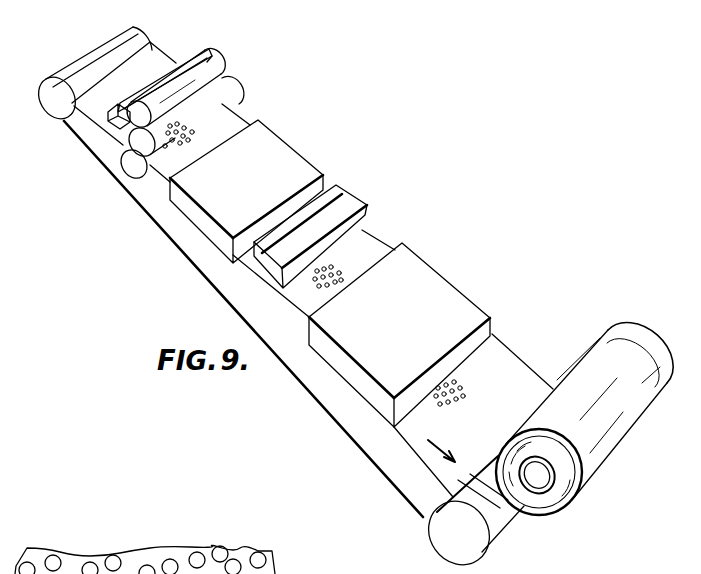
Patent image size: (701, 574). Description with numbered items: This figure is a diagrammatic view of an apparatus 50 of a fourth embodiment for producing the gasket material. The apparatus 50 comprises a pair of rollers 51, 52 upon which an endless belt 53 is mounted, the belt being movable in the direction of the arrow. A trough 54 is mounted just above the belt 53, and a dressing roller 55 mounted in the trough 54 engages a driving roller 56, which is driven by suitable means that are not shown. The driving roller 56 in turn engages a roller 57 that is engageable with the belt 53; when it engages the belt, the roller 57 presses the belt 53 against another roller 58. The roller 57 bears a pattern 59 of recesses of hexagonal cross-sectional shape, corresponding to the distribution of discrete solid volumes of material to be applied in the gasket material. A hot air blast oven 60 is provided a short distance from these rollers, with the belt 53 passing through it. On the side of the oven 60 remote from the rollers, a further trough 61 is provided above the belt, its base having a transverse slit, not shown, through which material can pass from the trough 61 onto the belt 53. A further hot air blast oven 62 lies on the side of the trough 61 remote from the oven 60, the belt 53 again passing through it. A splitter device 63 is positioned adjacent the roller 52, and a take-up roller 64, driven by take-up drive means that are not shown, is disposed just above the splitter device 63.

The apparatus 50 is at (300, 146).
The roller 51 is at (148, 34).
The roller 52 is at (442, 534).
The endless belt 53 is at (177, 60).
The trough 54 is at (213, 67).
The dressing roller 55 is at (122, 105).
The driving roller 56 is at (218, 95).
The roller 57 is at (240, 106).
The roller 58 is at (128, 167).
The pattern of recesses 59 is at (190, 128).
The hot air blast oven 60 is at (302, 177).
The trough 61 is at (338, 210).
The hot air blast oven 62 is at (438, 282).
The splitter device 63 is at (498, 515).
The take-up roller 64 is at (541, 486).